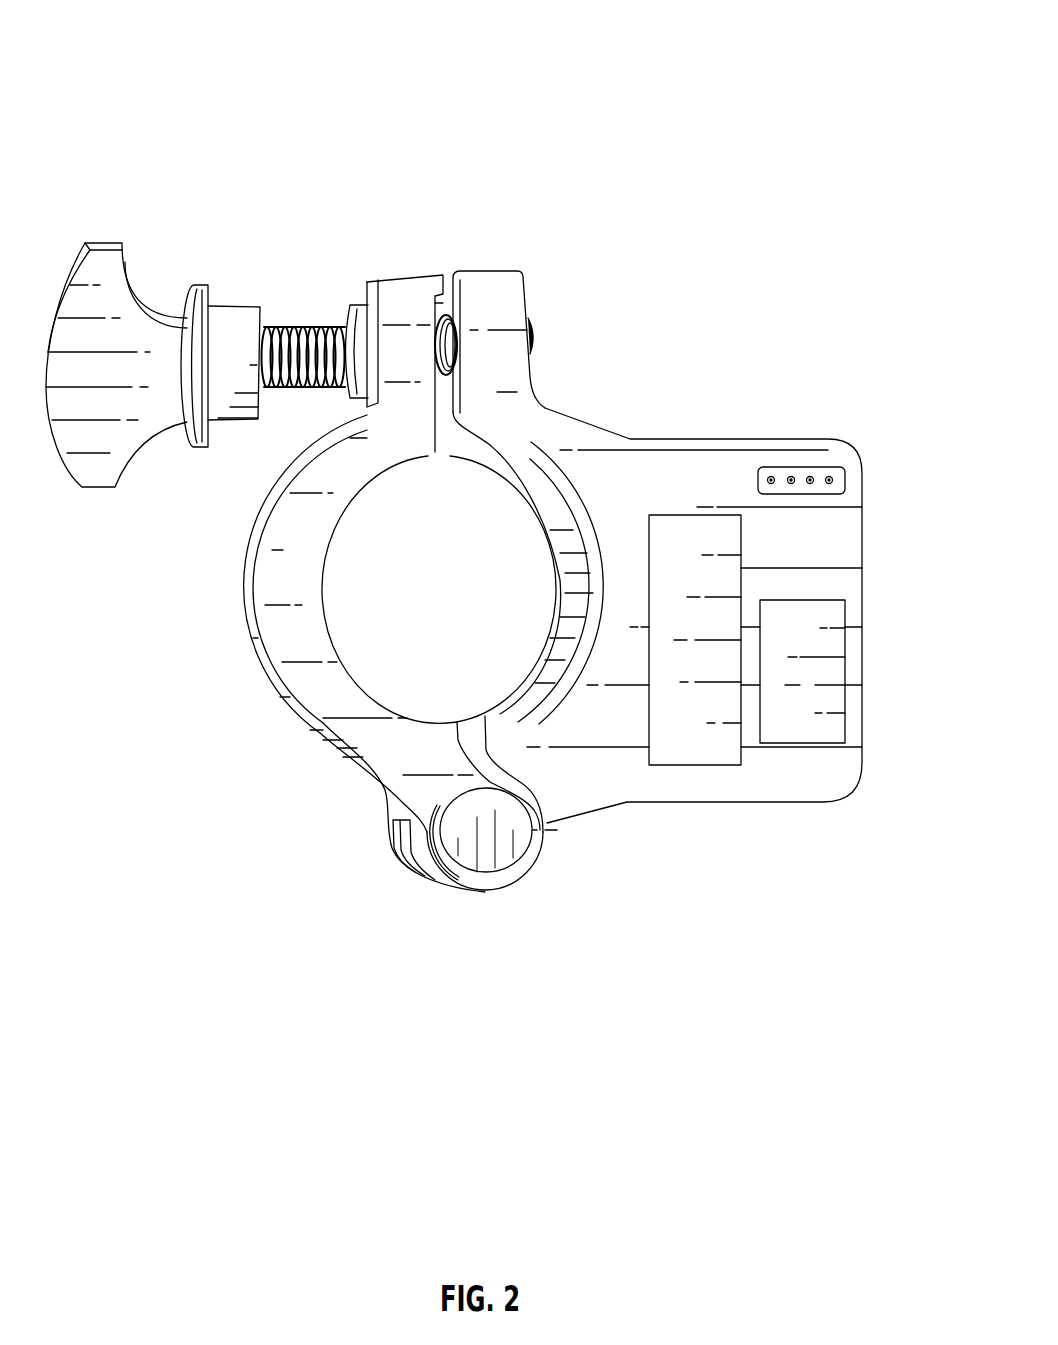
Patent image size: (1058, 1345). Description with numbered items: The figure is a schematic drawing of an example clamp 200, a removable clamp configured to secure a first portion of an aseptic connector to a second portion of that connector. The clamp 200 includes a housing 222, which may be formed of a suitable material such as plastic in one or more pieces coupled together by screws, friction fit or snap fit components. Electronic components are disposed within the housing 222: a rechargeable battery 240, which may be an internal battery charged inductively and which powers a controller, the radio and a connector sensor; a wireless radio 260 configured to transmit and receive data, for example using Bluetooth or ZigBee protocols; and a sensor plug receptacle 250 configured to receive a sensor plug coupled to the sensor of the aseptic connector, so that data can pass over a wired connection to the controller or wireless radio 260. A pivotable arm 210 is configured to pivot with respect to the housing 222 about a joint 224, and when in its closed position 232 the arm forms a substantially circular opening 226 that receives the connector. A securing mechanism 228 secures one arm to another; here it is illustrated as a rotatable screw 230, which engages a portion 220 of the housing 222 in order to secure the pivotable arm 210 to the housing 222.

The clamp 200 is at (832, 60).
The pivotable arm 210 is at (400, 275).
The portion of the housing 220 is at (532, 376).
The housing 222 is at (873, 413).
The joint 224 is at (527, 868).
The substantially circular opening 226 is at (388, 593).
The securing mechanism 228 is at (177, 228).
The rotatable screw 230 is at (297, 337).
The closed position 232 is at (455, 257).
The rechargeable battery 240 is at (691, 515).
The sensor plug receptacle 250 is at (847, 480).
The wireless radio 260 is at (847, 617).